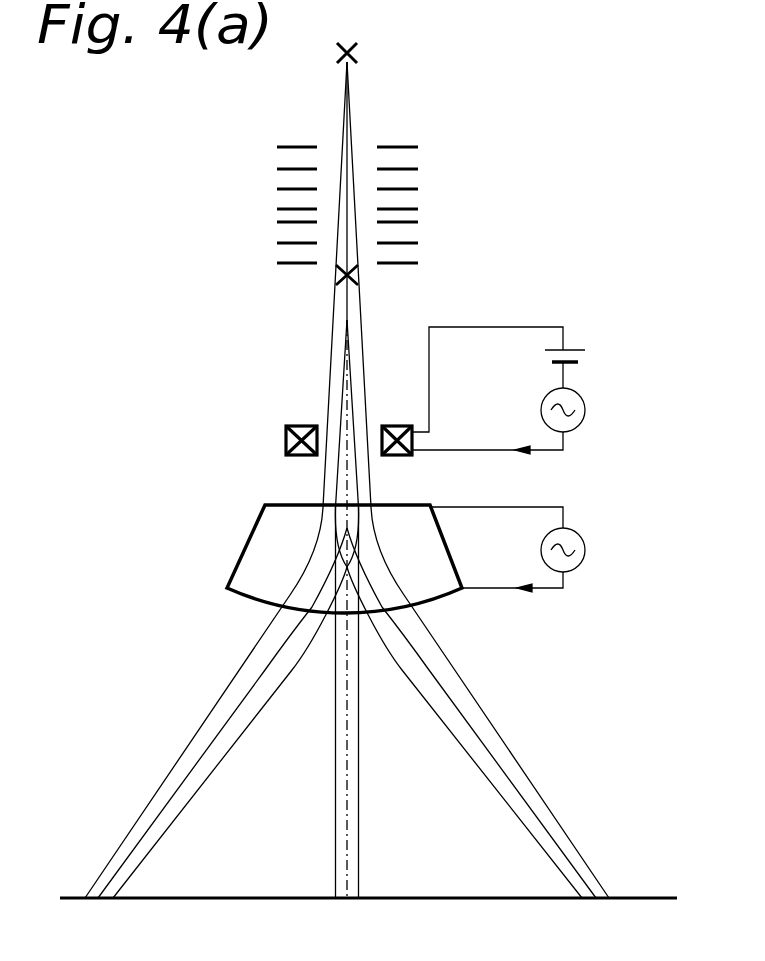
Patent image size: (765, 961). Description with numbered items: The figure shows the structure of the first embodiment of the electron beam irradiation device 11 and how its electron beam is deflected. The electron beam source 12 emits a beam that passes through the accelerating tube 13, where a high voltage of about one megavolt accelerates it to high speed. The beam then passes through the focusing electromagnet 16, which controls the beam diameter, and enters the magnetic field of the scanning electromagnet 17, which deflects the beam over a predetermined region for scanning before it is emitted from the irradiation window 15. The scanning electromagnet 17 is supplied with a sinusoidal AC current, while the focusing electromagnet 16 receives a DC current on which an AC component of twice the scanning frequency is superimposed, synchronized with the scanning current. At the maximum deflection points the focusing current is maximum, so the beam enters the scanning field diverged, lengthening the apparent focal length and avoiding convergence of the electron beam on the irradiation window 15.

The electron beam irradiation device 11 is at (504, 260).
The electron beam source 12 is at (359, 53).
The accelerating tube 13 is at (280, 189).
The irradiation window 15 is at (651, 898).
The focusing electromagnet 16 is at (286, 438).
The scanning electromagnet 17 is at (254, 527).